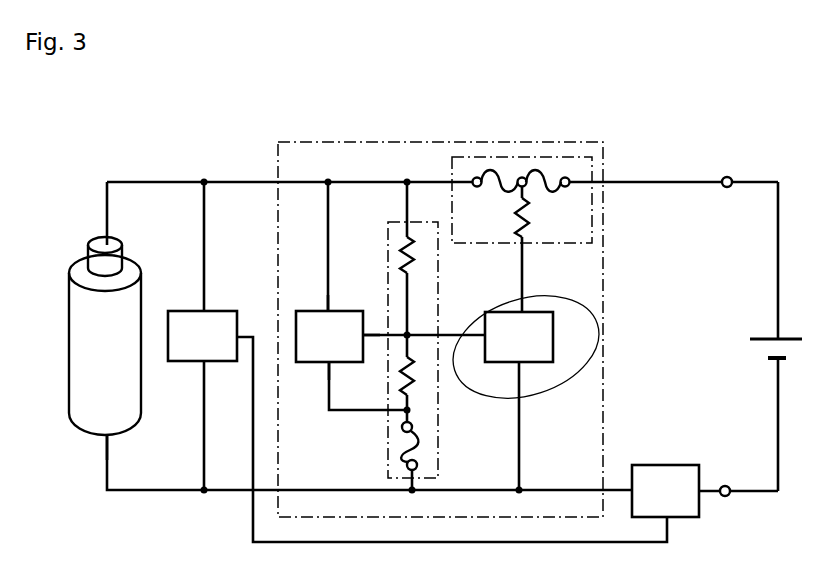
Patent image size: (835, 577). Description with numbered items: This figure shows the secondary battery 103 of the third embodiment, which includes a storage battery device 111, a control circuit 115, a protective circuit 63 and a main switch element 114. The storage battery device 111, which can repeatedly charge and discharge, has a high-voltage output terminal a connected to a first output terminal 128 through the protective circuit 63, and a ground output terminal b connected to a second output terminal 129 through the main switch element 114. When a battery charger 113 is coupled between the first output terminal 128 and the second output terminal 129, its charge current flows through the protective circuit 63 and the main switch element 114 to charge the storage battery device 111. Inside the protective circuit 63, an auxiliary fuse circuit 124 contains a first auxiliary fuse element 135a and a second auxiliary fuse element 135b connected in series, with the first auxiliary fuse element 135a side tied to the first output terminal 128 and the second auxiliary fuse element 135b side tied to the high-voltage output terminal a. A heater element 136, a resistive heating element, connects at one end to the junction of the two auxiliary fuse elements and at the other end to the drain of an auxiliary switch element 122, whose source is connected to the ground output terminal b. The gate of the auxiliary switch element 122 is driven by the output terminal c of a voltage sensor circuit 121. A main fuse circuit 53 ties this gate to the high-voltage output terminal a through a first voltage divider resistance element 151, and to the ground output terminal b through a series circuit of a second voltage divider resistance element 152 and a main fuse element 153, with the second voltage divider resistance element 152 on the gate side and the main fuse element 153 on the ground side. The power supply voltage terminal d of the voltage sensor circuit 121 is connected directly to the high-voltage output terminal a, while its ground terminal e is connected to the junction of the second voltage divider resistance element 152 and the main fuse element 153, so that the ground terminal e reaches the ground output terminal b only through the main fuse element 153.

The secondary battery 103 is at (181, 126).
The storage battery device 111 is at (76, 258).
The high-voltage output terminal a is at (112, 240).
The ground output terminal b is at (108, 445).
The control circuit 115 is at (174, 362).
The protective circuit 63 is at (385, 142).
The voltage sensor circuit 121 is at (302, 311).
The power supply voltage terminal d is at (330, 311).
The ground terminal e is at (326, 362).
The output terminal c is at (363, 340).
The first voltage divider resistance element 151 is at (420, 258).
The second voltage divider resistance element 152 is at (418, 378).
The main fuse element 153 is at (415, 450).
The first auxiliary fuse element 135a is at (545, 175).
The second auxiliary fuse element 135b is at (480, 163).
The heater element 136 is at (537, 216).
The auxiliary fuse circuit 124 is at (605, 158).
The first output terminal 128 is at (727, 176).
The battery charger 113 is at (762, 338).
The auxiliary switch element 122 is at (553, 335).
The main fuse circuit 53 is at (468, 360).
The main switch element 114 is at (668, 465).
The second output terminal 129 is at (727, 497).